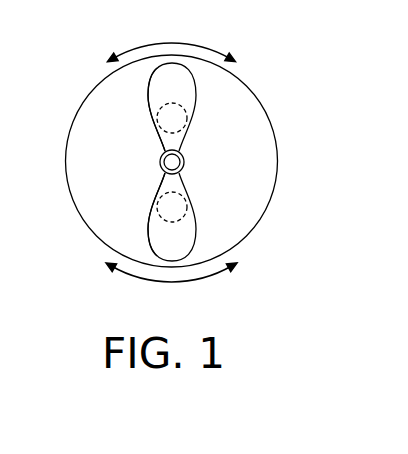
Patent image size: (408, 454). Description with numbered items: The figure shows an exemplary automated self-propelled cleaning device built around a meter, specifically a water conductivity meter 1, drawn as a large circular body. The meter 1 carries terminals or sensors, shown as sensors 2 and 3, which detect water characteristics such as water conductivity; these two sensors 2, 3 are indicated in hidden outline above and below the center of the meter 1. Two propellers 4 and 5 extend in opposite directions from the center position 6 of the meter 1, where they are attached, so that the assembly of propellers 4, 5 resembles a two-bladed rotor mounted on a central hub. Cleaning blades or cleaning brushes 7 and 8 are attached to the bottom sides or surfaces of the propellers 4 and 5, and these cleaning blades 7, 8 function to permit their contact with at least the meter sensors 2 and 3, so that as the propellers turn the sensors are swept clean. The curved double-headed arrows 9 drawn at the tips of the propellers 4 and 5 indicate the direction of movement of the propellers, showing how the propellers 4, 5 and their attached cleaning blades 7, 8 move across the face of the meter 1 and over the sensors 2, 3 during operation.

The water conductivity meter 1 is at (88, 97).
The sensor 2 is at (172, 118).
The sensor 3 is at (172, 207).
The propeller 4 is at (167, 250).
The propeller 5 is at (172, 82).
The center position 6 is at (168, 162).
The cleaning blade 7 is at (147, 95).
The cleaning blade 8 is at (147, 212).
The arrows 9 is at (152, 44).